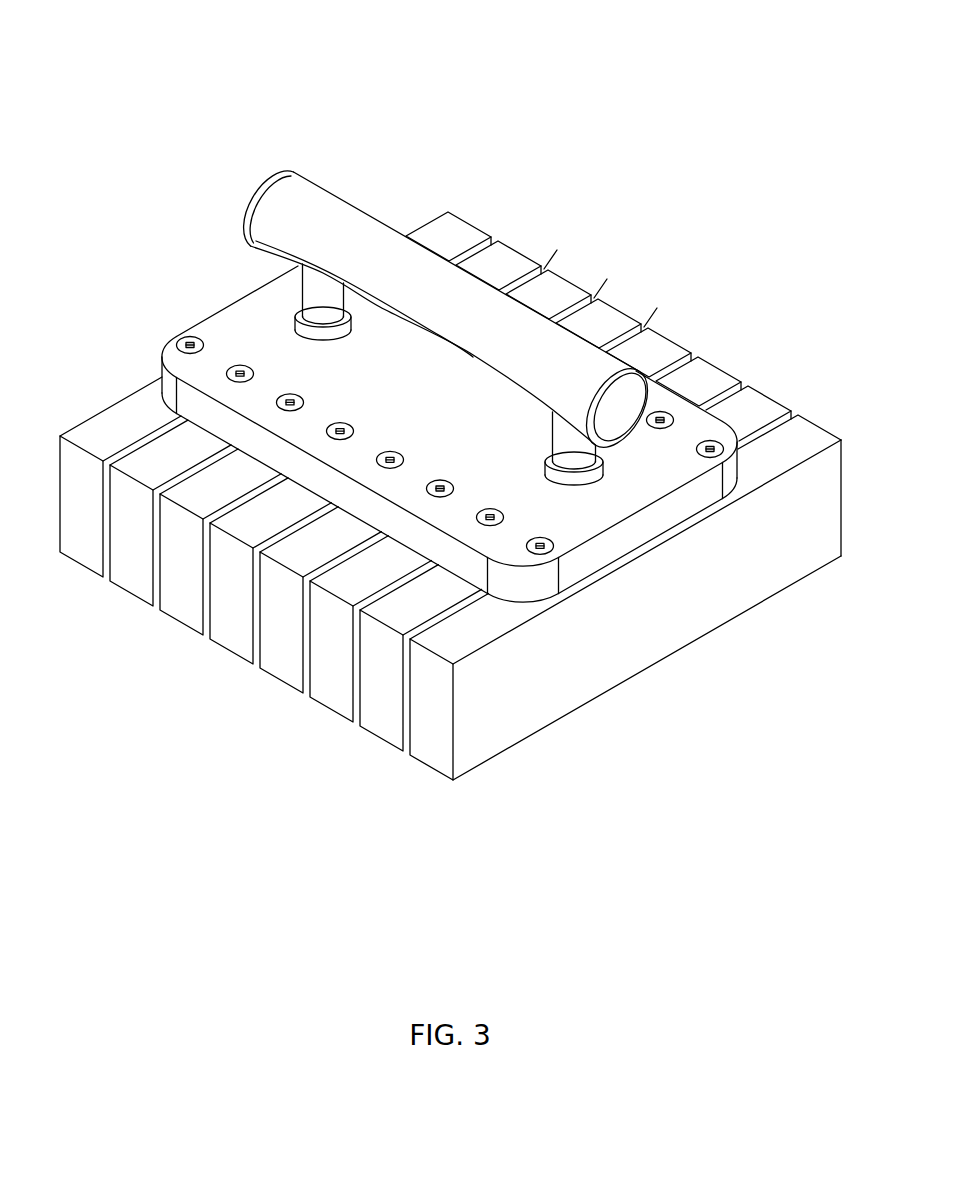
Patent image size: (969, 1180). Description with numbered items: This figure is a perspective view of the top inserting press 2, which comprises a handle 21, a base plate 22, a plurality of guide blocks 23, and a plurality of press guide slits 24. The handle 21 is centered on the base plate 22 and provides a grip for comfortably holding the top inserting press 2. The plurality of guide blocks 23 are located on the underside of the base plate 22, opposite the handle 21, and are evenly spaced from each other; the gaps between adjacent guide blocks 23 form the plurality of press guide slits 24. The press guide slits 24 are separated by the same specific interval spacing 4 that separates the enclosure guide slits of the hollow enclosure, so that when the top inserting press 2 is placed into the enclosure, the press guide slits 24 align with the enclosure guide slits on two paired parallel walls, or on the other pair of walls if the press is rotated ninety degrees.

The top inserting press 2 is at (461, 67).
The handle 21 is at (275, 204).
The base plate 22 is at (223, 327).
The guide blocks 23 is at (90, 565).
The press guide slits 24 is at (153, 606).
The specific interval spacing 4 is at (589, 275).